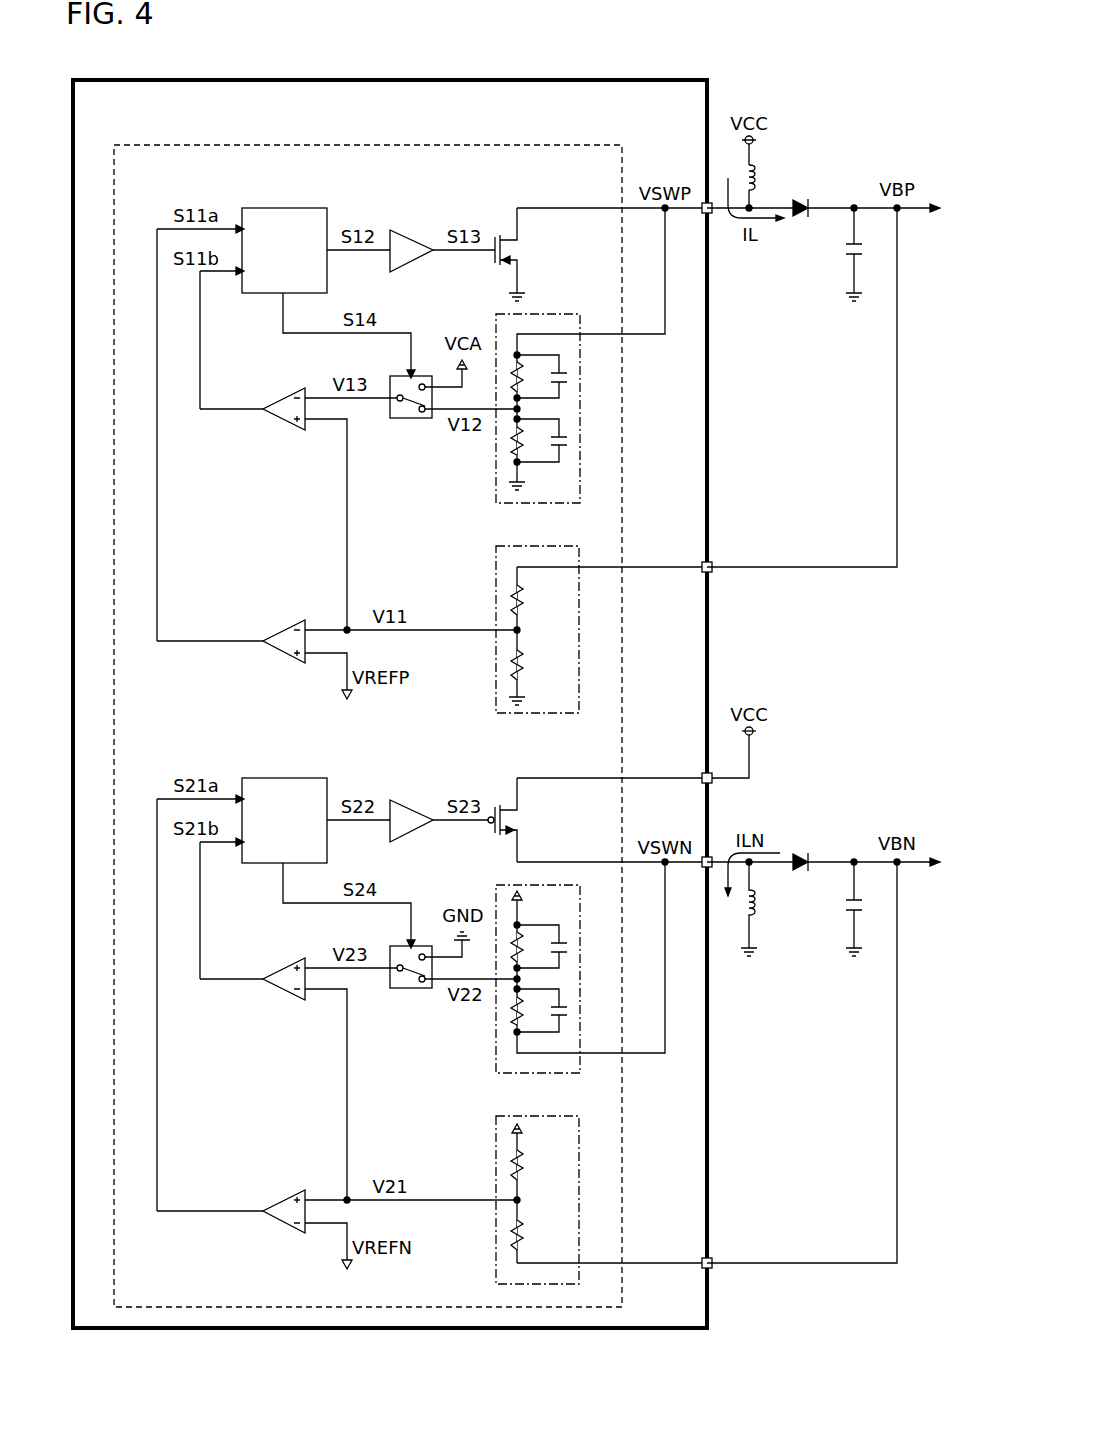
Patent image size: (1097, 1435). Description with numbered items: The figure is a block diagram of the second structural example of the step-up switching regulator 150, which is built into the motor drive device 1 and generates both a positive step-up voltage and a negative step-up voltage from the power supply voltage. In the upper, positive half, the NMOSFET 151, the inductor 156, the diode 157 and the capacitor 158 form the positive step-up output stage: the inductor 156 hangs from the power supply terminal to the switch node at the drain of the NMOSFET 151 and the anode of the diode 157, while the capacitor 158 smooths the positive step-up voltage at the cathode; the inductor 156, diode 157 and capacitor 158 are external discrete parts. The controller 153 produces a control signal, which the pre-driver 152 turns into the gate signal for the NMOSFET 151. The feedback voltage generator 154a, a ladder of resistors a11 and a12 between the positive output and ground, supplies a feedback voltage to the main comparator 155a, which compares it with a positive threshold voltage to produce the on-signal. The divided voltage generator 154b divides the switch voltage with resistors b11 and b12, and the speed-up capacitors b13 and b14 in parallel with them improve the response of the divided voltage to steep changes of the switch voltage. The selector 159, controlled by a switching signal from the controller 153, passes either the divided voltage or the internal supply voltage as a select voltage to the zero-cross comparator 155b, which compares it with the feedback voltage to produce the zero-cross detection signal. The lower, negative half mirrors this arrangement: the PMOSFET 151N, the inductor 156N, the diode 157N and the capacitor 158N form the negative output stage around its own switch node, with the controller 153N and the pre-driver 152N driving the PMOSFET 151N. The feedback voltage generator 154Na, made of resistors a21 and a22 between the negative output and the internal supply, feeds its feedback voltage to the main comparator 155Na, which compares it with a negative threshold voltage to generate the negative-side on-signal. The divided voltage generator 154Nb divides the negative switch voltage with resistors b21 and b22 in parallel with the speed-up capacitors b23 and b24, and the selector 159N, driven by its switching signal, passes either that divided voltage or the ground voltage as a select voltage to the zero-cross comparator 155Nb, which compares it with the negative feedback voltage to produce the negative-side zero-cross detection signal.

The motor drive device 1 is at (391, 80).
The step-up switching regulator 150 is at (372, 145).
The NMOSFET 151 is at (522, 252).
The pre-driver 152 is at (409, 232).
The controller 153 is at (287, 208).
The feedback voltage generator 154a is at (534, 546).
The divided voltage generator 154b is at (547, 312).
The main comparator 155a is at (290, 624).
The zero-cross comparator 155b is at (290, 392).
The inductor 156 is at (760, 178).
The diode 157 is at (800, 221).
The capacitor 158 is at (845, 253).
The selector 159 is at (411, 420).
The resistor a11 is at (524, 600).
The resistor a12 is at (524, 663).
The resistor b11 is at (525, 380).
The resistor b12 is at (525, 445).
The speed-up capacitor b13 is at (570, 377).
The speed-up capacitor b14 is at (570, 441).
The PMOSFET 151N is at (522, 822).
The pre-driver 152N is at (409, 802).
The controller 153N is at (287, 778).
The feedback voltage generator 154Na is at (534, 1116).
The divided voltage generator 154Nb is at (492, 888).
The main comparator 155Na is at (290, 1194).
The zero-cross comparator 155Nb is at (290, 962).
The inductor 156N is at (760, 907).
The diode 157N is at (801, 846).
The capacitor 158N is at (845, 905).
The selector 159N is at (411, 990).
The resistor a21 is at (524, 1165).
The resistor a22 is at (524, 1233).
The resistor b21 is at (525, 950).
The resistor b22 is at (525, 1015).
The speed-up capacitor b23 is at (570, 947).
The speed-up capacitor b24 is at (570, 1011).